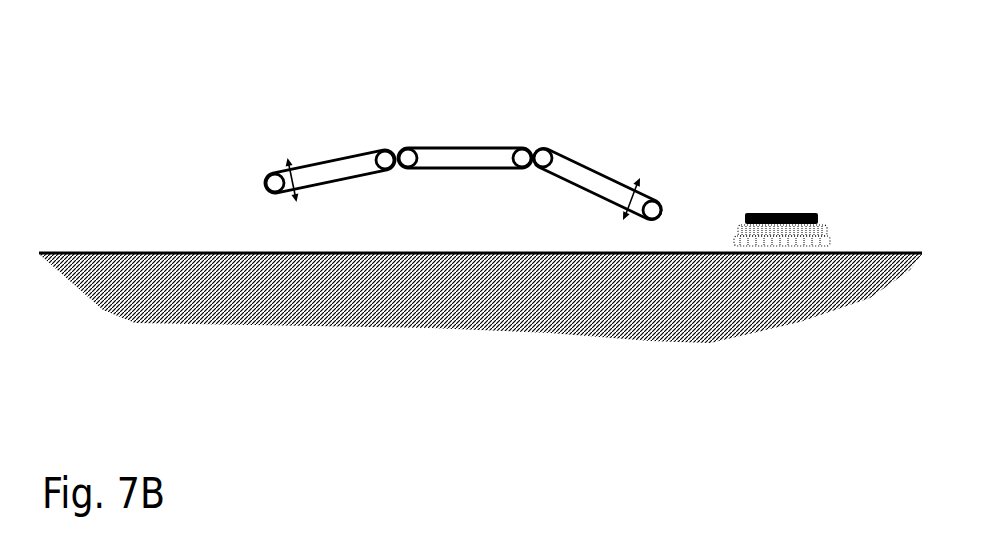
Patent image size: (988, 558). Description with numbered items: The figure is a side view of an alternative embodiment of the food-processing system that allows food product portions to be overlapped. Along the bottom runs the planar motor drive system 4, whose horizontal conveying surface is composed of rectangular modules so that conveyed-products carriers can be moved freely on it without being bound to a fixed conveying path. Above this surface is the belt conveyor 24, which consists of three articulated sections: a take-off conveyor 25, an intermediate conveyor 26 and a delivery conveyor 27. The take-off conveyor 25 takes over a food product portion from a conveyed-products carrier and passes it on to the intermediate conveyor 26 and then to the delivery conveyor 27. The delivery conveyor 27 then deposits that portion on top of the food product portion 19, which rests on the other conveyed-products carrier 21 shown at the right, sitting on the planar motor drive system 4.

The planar motor drive system 4 is at (430, 295).
The food product portion 19 is at (782, 214).
The conveyed-products carrier 21 is at (840, 237).
The belt conveyor 24 is at (463, 120).
The take-off conveyor 25 is at (590, 168).
The intermediate conveyor 26 is at (453, 148).
The delivery conveyor 27 is at (335, 158).